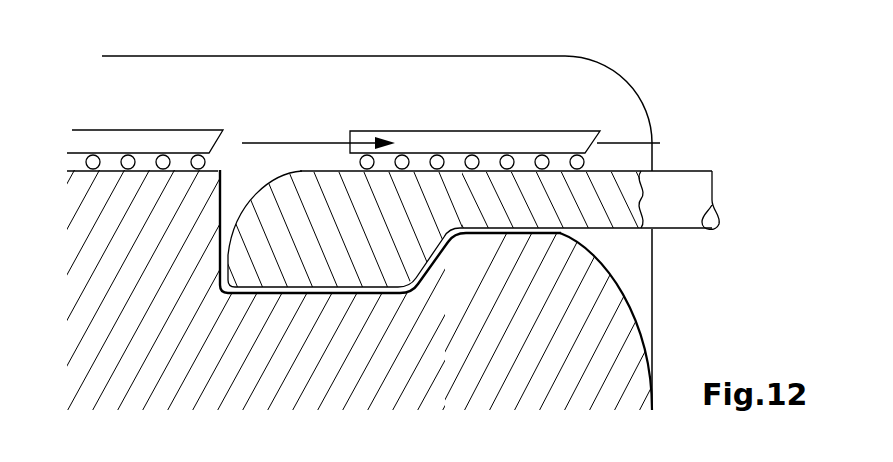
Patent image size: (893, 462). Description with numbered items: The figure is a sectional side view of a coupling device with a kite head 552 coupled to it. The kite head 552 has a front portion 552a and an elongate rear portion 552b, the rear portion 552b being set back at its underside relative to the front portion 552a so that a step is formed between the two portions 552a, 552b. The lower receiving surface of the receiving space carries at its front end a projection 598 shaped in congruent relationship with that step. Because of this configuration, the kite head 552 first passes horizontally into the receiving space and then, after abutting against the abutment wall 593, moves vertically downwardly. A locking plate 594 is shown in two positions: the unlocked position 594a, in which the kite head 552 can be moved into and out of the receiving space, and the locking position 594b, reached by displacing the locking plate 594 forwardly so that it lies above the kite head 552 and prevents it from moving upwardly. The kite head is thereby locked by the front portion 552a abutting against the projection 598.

The kite head 552 is at (402, 227).
The front portion 552a is at (352, 232).
The elongate rear portion 552b is at (553, 232).
The abutment wall 593 is at (236, 190).
The locking plate 594 is at (193, 137).
The unlocked position 594a is at (168, 108).
The locking position 594b is at (494, 90).
The projection 598 is at (370, 345).